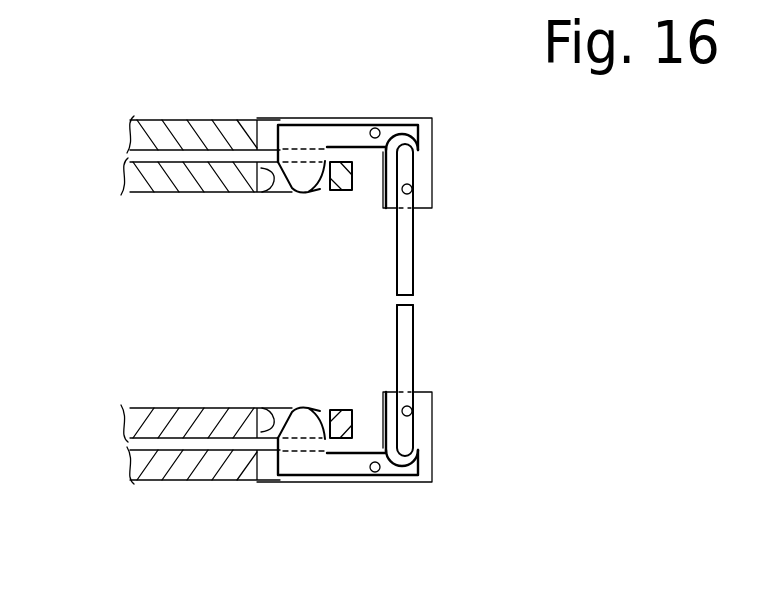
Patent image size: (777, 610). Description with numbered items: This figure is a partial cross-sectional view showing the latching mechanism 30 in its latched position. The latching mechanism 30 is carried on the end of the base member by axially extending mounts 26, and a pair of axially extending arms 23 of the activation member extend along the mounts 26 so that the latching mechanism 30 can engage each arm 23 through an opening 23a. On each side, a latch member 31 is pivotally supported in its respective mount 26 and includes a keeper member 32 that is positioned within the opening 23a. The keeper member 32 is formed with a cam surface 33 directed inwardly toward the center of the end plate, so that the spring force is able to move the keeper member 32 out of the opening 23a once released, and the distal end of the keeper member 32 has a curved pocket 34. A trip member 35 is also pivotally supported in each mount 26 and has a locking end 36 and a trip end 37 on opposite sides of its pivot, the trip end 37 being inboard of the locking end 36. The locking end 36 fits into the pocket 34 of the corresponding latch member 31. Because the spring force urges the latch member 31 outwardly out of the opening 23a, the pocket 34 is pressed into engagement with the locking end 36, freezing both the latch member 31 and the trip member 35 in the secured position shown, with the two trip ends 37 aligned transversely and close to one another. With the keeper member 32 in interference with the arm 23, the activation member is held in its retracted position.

The arm 23 is at (148, 192).
The opening 23a is at (274, 180).
The mount 26 is at (183, 120).
The latching mechanism 30 is at (556, 399).
The latch member 31 is at (332, 126).
The keeper member 32 is at (288, 178).
The cam surface 33 is at (322, 174).
The curved pocket 34 is at (403, 130).
The trip member 35 is at (402, 232).
The locking end 36 is at (419, 160).
The trip end 37 is at (402, 323).